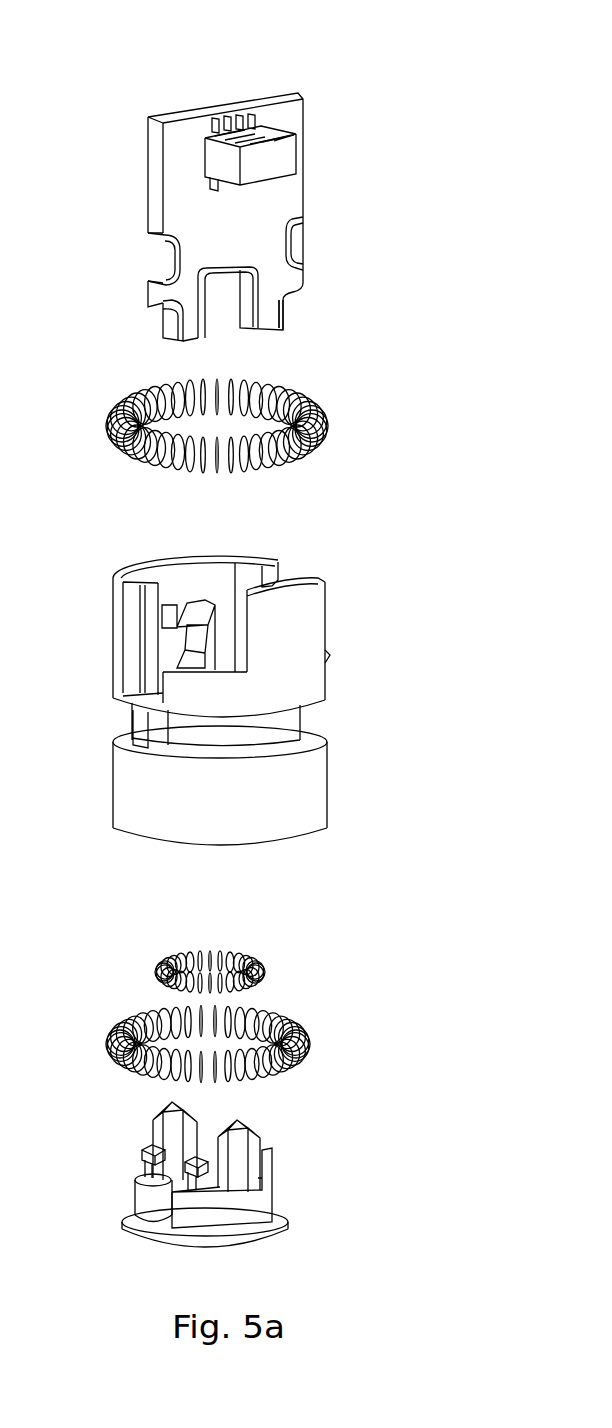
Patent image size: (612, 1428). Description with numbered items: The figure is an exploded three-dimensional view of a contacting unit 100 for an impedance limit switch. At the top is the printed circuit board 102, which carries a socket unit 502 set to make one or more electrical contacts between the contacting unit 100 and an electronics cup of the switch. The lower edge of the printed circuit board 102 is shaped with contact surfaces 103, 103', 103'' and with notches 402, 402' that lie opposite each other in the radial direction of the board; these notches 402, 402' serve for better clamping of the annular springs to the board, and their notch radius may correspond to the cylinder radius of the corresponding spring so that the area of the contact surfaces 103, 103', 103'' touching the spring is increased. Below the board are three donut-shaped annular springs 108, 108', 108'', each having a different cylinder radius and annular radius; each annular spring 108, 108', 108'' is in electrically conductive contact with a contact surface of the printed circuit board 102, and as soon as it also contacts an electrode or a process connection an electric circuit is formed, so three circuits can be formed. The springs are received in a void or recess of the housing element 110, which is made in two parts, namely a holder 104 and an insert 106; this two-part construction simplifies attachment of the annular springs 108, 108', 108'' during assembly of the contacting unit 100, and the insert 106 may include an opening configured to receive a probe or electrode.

The contacting unit 100 is at (226, 196).
The printed circuit board 102 is at (221, 98).
The socket unit 502 is at (201, 76).
The contact surface 103 is at (162, 170).
The contact surface 103' is at (321, 203).
The contact surface 103'' is at (339, 343).
The notch 402 is at (110, 270).
The notch 402' is at (122, 342).
The annular spring 108 is at (250, 459).
The annular spring 108' is at (171, 951).
The annular spring 108'' is at (238, 1085).
The housing element 110 is at (277, 685).
The holder 104 is at (233, 797).
The insert 106 is at (247, 1205).